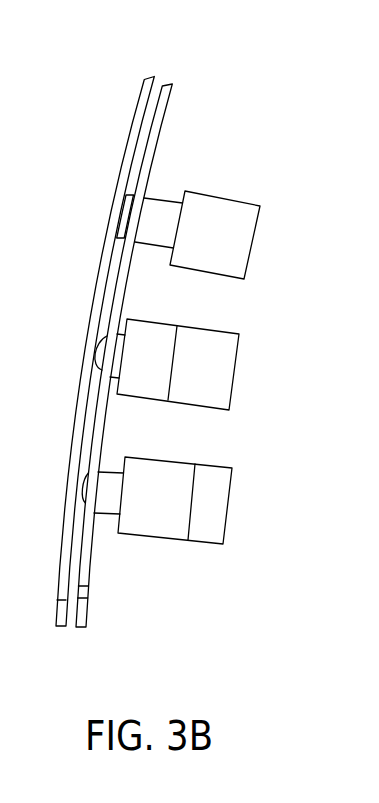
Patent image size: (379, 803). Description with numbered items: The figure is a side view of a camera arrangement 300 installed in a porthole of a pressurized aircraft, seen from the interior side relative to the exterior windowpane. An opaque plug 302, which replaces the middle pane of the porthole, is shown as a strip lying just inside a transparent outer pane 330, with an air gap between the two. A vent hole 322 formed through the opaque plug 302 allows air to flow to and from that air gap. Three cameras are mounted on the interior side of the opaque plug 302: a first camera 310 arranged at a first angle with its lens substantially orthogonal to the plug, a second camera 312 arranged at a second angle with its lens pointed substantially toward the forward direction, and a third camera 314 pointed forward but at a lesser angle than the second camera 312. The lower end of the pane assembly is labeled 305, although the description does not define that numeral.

The camera arrangement 300 is at (250, 80).
The opaque plug 302 is at (167, 84).
The end portion of sheath 305 is at (70, 615).
The first camera 310 is at (238, 238).
The second camera 312 is at (218, 369).
The third camera 314 is at (215, 502).
The vent hole 322 is at (88, 591).
The transparent outer pane 330 is at (132, 125).